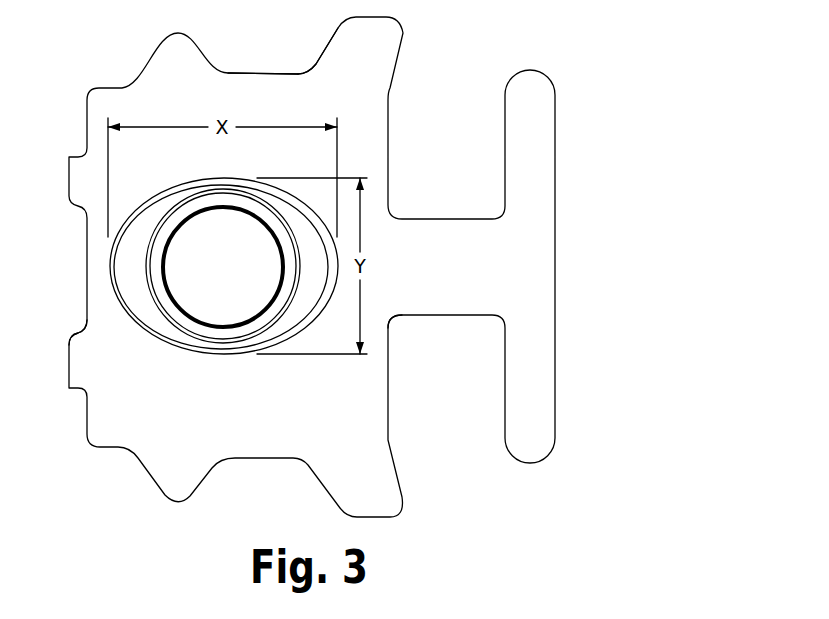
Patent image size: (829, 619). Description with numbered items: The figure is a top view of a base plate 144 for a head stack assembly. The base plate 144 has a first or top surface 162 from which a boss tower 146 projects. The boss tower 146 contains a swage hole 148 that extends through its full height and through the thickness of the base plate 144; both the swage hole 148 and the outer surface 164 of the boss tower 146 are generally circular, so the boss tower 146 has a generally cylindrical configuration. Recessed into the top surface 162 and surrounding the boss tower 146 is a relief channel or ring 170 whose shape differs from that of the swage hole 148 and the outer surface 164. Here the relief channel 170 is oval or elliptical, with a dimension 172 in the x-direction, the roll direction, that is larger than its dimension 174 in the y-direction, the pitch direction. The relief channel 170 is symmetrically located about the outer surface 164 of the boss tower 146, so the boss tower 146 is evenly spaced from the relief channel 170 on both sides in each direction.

The base plate 144 is at (472, 58).
The boss tower 146 is at (158, 297).
The swage hole 148 is at (200, 237).
The first or top surface 162 is at (220, 92).
The outer surface 164 is at (148, 270).
The relief channel or ring 170 is at (138, 326).
The dimension in the x-direction 172 is at (282, 128).
The dimension in the y-direction 174 is at (360, 305).